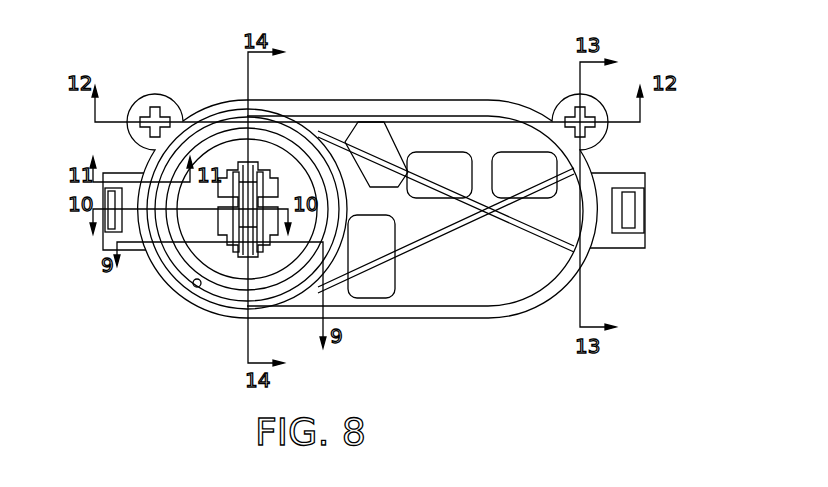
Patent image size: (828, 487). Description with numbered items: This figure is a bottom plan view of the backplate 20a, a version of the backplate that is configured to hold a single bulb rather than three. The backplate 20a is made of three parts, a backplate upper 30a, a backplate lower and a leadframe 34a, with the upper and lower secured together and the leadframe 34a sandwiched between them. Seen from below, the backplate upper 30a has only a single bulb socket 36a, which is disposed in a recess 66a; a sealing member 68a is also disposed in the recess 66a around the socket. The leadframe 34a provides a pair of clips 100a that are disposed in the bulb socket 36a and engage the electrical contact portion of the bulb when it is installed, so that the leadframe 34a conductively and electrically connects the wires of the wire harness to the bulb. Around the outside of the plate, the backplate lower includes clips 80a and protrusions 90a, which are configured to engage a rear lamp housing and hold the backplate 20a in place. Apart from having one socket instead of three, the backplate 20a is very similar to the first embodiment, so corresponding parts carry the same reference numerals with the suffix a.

The backplate 20a is at (362, 179).
The backplate upper 30a is at (386, 100).
The leadframe 34a is at (274, 175).
The bulb socket 36a is at (237, 157).
The recess 66a is at (199, 287).
The sealing member 68a is at (178, 253).
The clips 80a is at (98, 254).
The protrusions 90a is at (152, 112).
The clips 100a is at (265, 171).